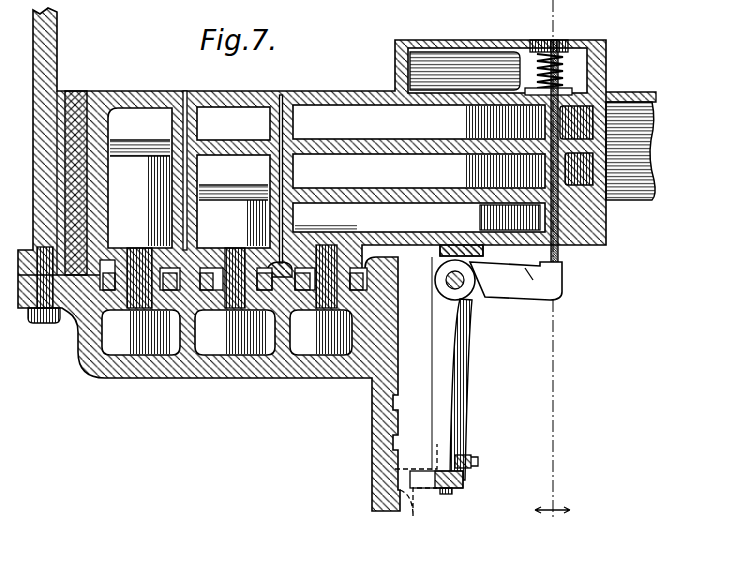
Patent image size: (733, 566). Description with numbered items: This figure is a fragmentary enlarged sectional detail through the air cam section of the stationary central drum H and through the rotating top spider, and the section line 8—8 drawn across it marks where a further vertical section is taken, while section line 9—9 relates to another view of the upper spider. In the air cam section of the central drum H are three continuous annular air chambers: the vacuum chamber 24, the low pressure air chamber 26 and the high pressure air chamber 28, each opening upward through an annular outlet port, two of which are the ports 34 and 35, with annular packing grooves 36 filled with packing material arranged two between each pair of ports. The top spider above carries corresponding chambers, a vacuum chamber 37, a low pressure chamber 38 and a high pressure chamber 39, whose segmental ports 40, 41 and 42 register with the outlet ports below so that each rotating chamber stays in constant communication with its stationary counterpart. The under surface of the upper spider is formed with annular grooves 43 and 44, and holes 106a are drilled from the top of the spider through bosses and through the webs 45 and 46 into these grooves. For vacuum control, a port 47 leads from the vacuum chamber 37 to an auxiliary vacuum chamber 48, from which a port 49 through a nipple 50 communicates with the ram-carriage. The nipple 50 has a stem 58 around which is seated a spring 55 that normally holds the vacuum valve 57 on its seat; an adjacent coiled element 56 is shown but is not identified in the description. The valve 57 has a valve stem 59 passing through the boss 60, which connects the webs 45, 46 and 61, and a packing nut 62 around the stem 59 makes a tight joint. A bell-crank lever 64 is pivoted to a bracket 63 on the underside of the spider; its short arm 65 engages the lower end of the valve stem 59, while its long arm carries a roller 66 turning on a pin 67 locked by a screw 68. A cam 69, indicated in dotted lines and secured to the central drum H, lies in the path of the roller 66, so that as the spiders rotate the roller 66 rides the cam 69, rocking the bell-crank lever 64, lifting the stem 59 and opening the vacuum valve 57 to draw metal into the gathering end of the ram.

The section line 9 is at (97, 92).
The section line 8 is at (552, 521).
The vacuum chamber 24 is at (112, 378).
The low pressure air chamber 26 is at (203, 380).
The high pressure air chamber 28 is at (290, 380).
The annular outlet port 34 is at (235, 331).
The annular outlet port 35 is at (296, 372).
The packing grooves 36 is at (68, 332).
The vacuum chamber 37 is at (443, 122).
The low pressure chamber 38 is at (443, 169).
The high pressure chamber 39 is at (419, 217).
The segmental port 40 is at (142, 262).
The segmental port 41 is at (236, 262).
The segmental port 42 is at (330, 257).
The annular groove 43 is at (205, 262).
The annular groove 44 is at (262, 216).
The web 45 is at (175, 200).
The web 46 is at (454, 190).
The port 47 is at (612, 128).
The auxiliary vacuum chamber 48 is at (499, 52).
The port 49 is at (560, 46).
The nipple 50 is at (530, 42).
The spring 55 is at (560, 86).
The spring 56 is at (573, 40).
The vacuum valve 57 is at (595, 89).
The stem 58 is at (400, 559).
The valve stem 59 is at (630, 160).
The boss 60 is at (575, 248).
The web 61 is at (510, 218).
The packing nut 62 is at (562, 270).
The bracket 63 is at (443, 246).
The bell-crank lever 64 is at (476, 286).
The short arm 65 is at (536, 280).
The roller 66 is at (465, 486).
The pin 67 is at (446, 493).
The screw 68 is at (470, 455).
The cam 69 is at (418, 502).
The holes 106a is at (272, 128).
The central drum H is at (376, 415).